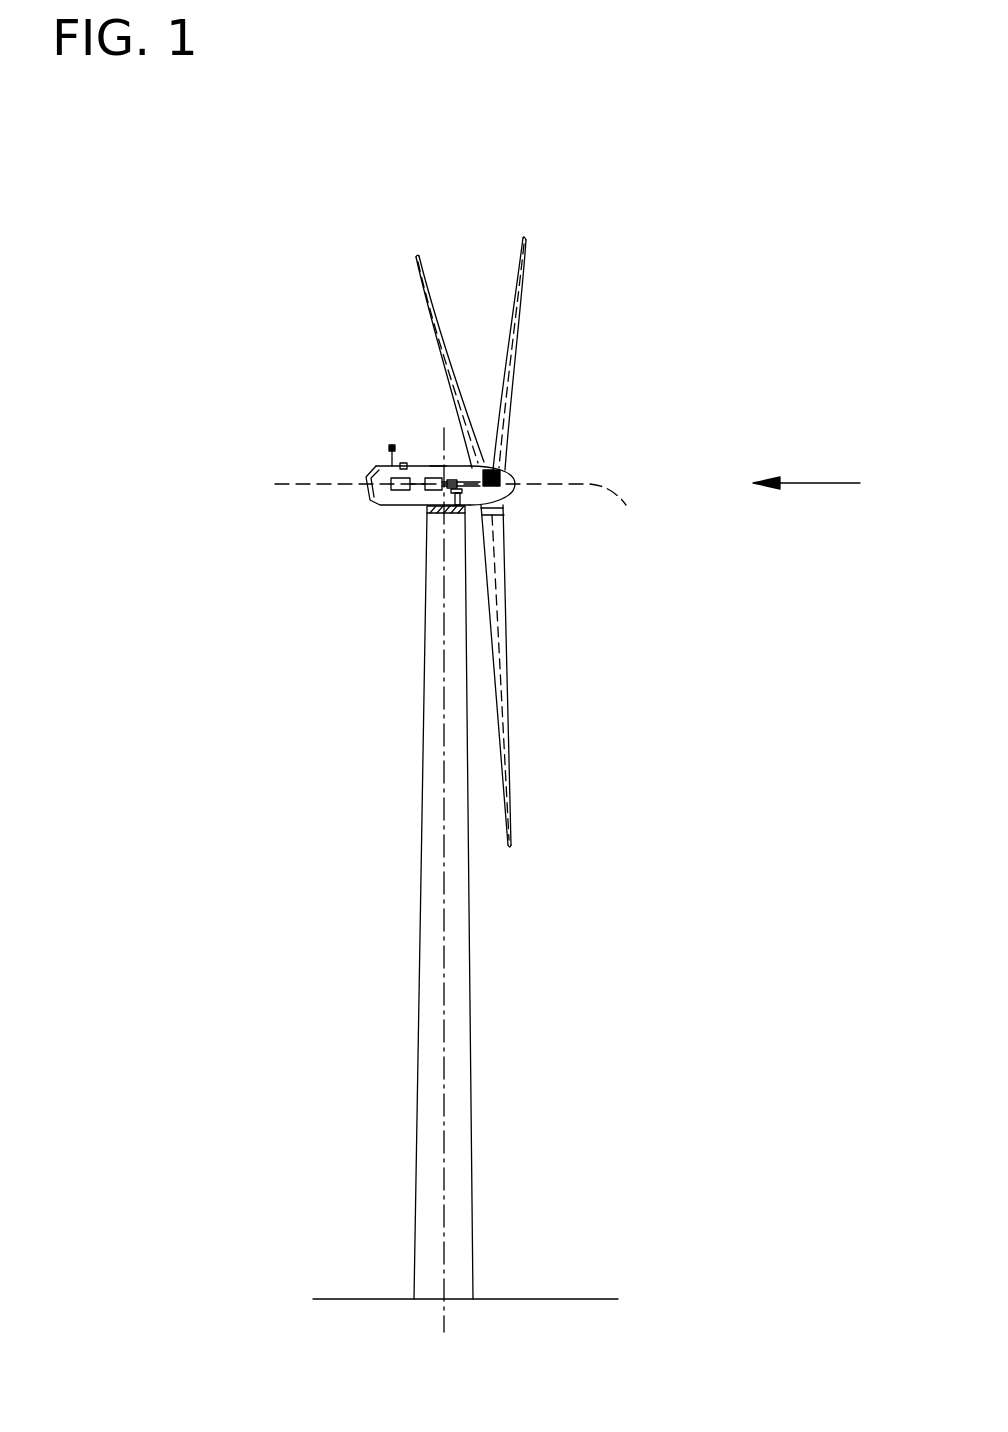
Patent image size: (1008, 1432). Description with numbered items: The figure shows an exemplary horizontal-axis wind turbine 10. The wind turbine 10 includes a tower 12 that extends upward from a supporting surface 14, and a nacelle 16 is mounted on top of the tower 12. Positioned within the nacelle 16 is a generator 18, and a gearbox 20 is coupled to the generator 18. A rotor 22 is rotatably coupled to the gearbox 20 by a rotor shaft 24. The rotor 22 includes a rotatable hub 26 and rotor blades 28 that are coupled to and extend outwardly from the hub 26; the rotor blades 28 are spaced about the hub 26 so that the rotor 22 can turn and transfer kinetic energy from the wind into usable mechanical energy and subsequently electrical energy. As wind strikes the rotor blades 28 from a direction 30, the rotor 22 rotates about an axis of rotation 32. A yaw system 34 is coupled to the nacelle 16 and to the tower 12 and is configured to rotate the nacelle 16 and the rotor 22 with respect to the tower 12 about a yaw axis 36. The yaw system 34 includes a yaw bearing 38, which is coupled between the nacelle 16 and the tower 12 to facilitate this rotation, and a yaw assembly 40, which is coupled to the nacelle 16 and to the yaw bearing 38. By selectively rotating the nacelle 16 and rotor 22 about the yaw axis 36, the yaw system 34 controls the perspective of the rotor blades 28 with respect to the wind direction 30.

The wind turbine 10 is at (198, 270).
The tower 12 is at (418, 1062).
The supporting surface 14 is at (372, 1298).
The nacelle 16 is at (388, 505).
The generator 18 is at (392, 471).
The gearbox 20 is at (428, 476).
The rotor 22 is at (527, 431).
The rotor shaft 24 is at (443, 467).
The rotatable hub 26 is at (514, 472).
The rotor blade 28 is at (436, 330).
The wind direction 30 is at (829, 482).
The axis of rotation 32 is at (469, 504).
The yaw system 34 is at (448, 567).
The yaw axis 36 is at (445, 1000).
The yaw bearing 38 is at (410, 525).
The yaw assembly 40 is at (470, 498).